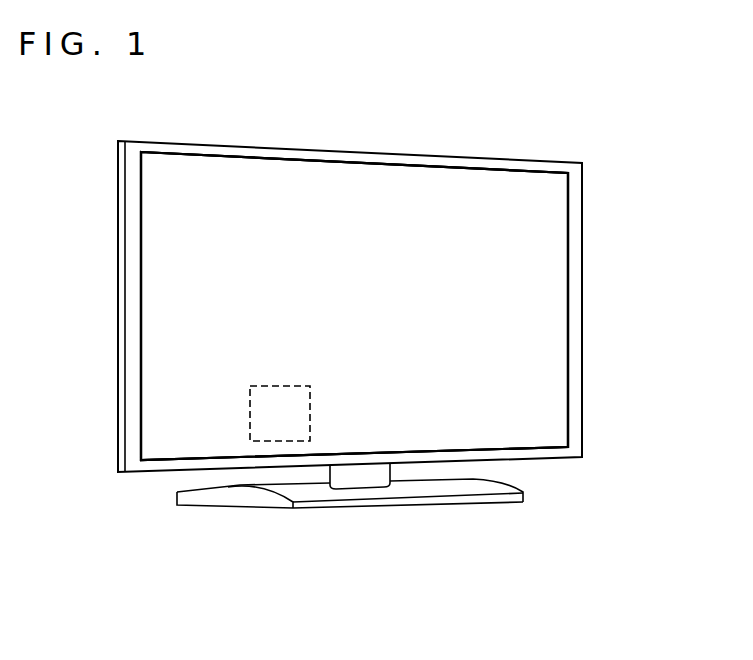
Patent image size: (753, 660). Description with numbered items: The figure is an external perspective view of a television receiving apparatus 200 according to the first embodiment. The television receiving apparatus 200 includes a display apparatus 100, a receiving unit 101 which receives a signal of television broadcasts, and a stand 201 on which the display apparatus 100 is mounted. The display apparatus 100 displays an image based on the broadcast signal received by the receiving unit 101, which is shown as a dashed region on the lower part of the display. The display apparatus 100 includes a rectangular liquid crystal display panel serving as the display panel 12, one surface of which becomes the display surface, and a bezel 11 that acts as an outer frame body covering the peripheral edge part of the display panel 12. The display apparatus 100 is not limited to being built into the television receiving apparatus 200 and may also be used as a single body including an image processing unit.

The television receiving apparatus 200 is at (371, 329).
The bezel 11 is at (582, 228).
The display panel 12 is at (533, 285).
The display apparatus 100 is at (535, 358).
The receiving unit 101 is at (250, 413).
The stand 201 is at (472, 490).